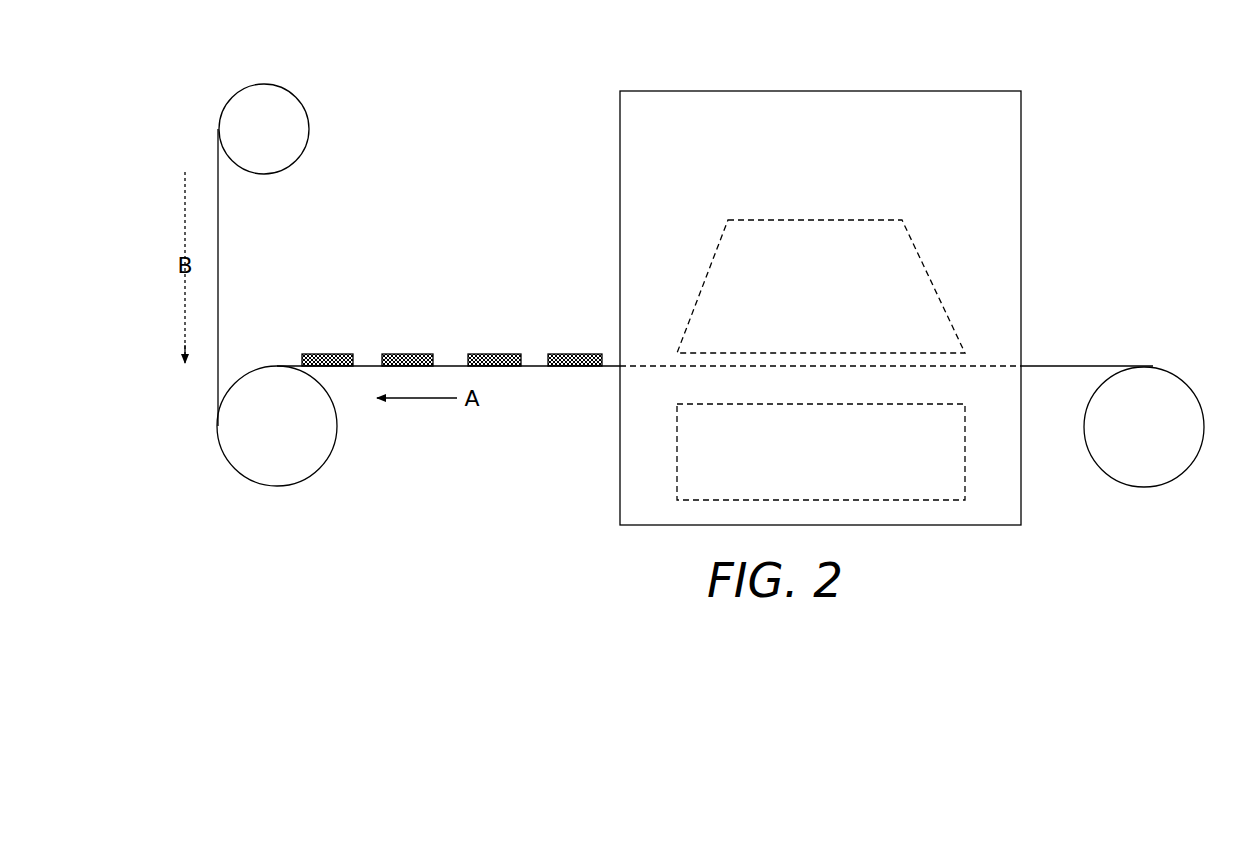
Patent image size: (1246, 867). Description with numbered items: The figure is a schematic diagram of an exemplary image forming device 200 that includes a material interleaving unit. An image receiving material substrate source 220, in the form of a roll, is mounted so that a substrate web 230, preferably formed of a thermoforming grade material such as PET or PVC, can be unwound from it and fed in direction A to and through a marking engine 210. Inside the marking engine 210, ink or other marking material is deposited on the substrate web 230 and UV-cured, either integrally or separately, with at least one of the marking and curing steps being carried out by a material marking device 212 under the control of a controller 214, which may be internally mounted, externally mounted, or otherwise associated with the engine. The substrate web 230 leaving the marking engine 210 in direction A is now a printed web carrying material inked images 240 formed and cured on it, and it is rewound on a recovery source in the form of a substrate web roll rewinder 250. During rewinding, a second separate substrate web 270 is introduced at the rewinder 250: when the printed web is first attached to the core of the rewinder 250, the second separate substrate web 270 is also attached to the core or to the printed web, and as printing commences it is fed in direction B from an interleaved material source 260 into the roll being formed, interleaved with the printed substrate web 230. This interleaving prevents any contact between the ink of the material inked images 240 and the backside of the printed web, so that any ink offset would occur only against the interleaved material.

The image forming device 200 is at (463, 70).
The marking engine 210 is at (712, 90).
The material marking device 212 is at (708, 258).
The controller 214 is at (966, 436).
The image receiving material substrate source 220 is at (1188, 385).
The substrate web 230 is at (1070, 365).
The material inked images 240 is at (573, 354).
The substrate web roll rewinder 250 is at (312, 475).
The interleaved material source 260 is at (303, 103).
The second separate substrate web 270 is at (218, 265).